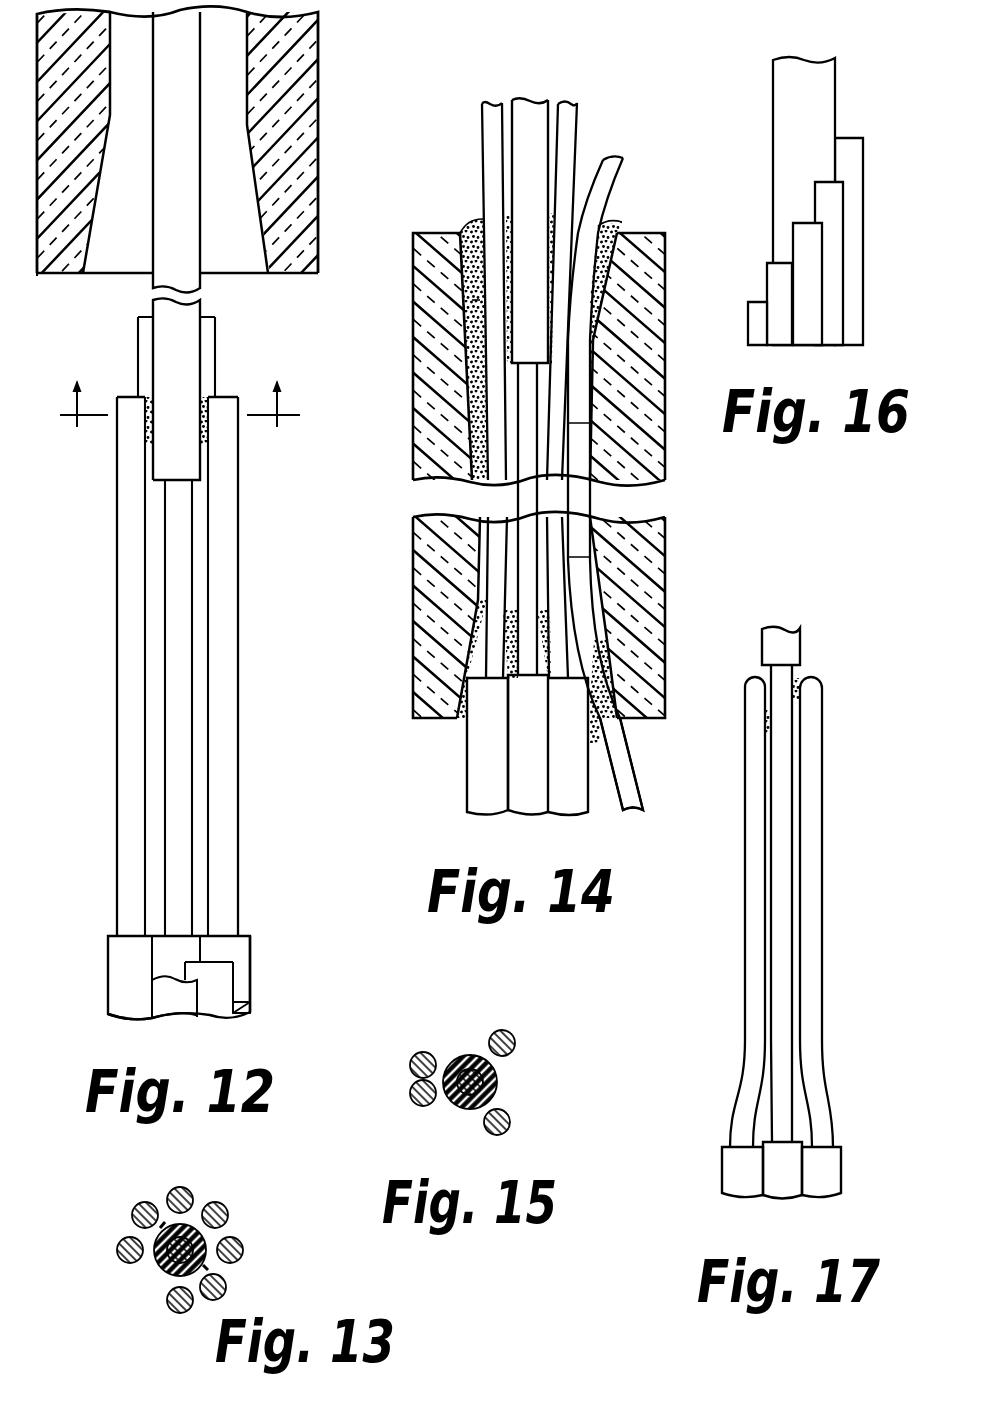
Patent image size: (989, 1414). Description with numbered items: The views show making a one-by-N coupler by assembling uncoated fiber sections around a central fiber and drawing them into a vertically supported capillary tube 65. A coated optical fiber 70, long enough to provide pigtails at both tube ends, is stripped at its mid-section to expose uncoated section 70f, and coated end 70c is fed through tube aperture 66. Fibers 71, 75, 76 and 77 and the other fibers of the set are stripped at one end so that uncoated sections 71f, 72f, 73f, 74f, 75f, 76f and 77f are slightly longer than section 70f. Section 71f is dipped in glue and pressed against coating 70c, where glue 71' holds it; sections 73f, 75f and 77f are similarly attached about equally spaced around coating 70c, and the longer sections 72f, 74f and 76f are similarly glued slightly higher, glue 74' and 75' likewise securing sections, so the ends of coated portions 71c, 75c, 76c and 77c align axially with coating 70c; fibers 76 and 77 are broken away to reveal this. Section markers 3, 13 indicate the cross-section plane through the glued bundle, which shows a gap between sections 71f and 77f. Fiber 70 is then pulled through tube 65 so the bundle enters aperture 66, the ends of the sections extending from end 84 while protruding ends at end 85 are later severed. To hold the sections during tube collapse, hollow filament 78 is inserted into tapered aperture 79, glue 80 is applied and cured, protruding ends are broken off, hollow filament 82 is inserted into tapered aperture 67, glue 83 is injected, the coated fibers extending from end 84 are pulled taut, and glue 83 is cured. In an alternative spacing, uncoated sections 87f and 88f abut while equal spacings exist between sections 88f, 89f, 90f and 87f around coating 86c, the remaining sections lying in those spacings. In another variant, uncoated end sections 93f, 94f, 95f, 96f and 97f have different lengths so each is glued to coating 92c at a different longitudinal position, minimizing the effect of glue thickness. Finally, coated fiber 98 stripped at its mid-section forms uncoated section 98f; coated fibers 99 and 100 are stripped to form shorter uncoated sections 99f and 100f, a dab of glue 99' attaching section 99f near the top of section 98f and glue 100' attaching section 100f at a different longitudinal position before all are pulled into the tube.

In FIG. 12, the section line arrow 3 is at (70, 407).
In FIG. 12, the section line 13 is at (286, 407).
In FIG. 12, the tube 65 is at (318, 67).
In FIG. 14, the tube 65 is at (667, 560).
In FIG. 12, the tube aperture 66 is at (100, 73).
In FIG. 14, the tube aperture 66 is at (598, 460).
In FIG. 12, the tapered aperture 67 is at (262, 212).
In FIG. 14, the tapered aperture 67 is at (601, 610).
In FIG. 12, the coated optical fiber 70 is at (150, 256).
In FIG. 14, the coated optical fiber 70 is at (528, 122).
In FIG. 12, the coated end 70c is at (160, 183).
In FIG. 13, the coated end 70c is at (160, 1275).
In FIG. 12, the uncoated section 70f is at (180, 598).
In FIG. 14, the uncoated section 70f is at (527, 440).
In FIG. 12, the coated optical fiber 71 is at (146, 977).
In FIG. 14, the coated optical fiber 71 is at (440, 746).
In FIG. 12, the coated portion 71c is at (118, 972).
In FIG. 12, the uncoated section 71f is at (128, 598).
In FIG. 13, the uncoated section 71f is at (116, 1248).
In FIG. 14, the uncoated section 71f is at (488, 122).
In FIG. 12, the glue 71' is at (116, 436).
In FIG. 13, the glue 71' is at (116, 1217).
In FIG. 12, the uncoated section 72f is at (138, 352).
In FIG. 13, the uncoated section 72f is at (138, 1204).
In FIG. 13, the uncoated section 73f is at (178, 1187).
In FIG. 12, the uncoated section 74f is at (213, 352).
In FIG. 13, the uncoated section 74f is at (220, 1203).
In FIG. 13, the adhesive joint 74' is at (246, 1233).
In FIG. 12, the coated optical fiber 75 is at (286, 957).
In FIG. 14, the coated optical fiber 75 is at (586, 771).
In FIG. 12, the coated portion 75c is at (240, 977).
In FIG. 12, the uncoated section 75f is at (230, 648).
In FIG. 13, the uncoated section 75f is at (244, 1250).
In FIG. 14, the uncoated section 75f is at (572, 118).
In FIG. 12, the adhesive joint 75' is at (247, 445).
In FIG. 12, the coated optical fiber 76 is at (248, 1015).
In FIG. 12, the coated portion 76c is at (222, 1003).
In FIG. 13, the uncoated section 76f is at (227, 1290).
In FIG. 12, the coated optical fiber 77 is at (145, 1002).
In FIG. 12, the coated portion 77c is at (178, 1010).
In FIG. 13, the uncoated section 77f is at (170, 1312).
In FIG. 14, the hollow filament 78 is at (618, 195).
In FIG. 14, the tapered aperture 79 is at (474, 306).
In FIG. 14, the glue 80 is at (472, 226).
In FIG. 14, the hollow filament 82 is at (632, 770).
In FIG. 14, the glue 83 is at (465, 722).
In FIG. 12, the end 84 is at (50, 276).
In FIG. 14, the end 84 is at (430, 718).
In FIG. 14, the end 85 is at (430, 233).
In FIG. 15, the coating 86c is at (490, 1078).
In FIG. 15, the uncoated fiber section 87f is at (411, 1100).
In FIG. 15, the uncoated fiber section 88f is at (410, 1064).
In FIG. 15, the uncoated fiber section 89f is at (502, 1030).
In FIG. 15, the uncoated fiber section 90f is at (512, 1124).
In FIG. 16, the coating 92c is at (782, 72).
In FIG. 16, the uncoated end section 93f is at (756, 318).
In FIG. 16, the uncoated end section 94f is at (778, 277).
In FIG. 16, the uncoated end section 95f is at (804, 240).
In FIG. 16, the uncoated end section 96f is at (826, 197).
In FIG. 16, the uncoated end section 97f is at (850, 143).
In FIG. 17, the coated fiber 98 is at (783, 1198).
In FIG. 17, the uncoated section 98f is at (782, 807).
In FIG. 17, the coated fiber 99 is at (705, 1172).
In FIG. 17, the uncoated section 99f is at (757, 870).
In FIG. 17, the dab of glue 99' is at (730, 717).
In FIG. 17, the coated fiber 100 is at (850, 1156).
In FIG. 17, the uncoated section 100f is at (812, 773).
In FIG. 17, the glue 100' is at (841, 688).